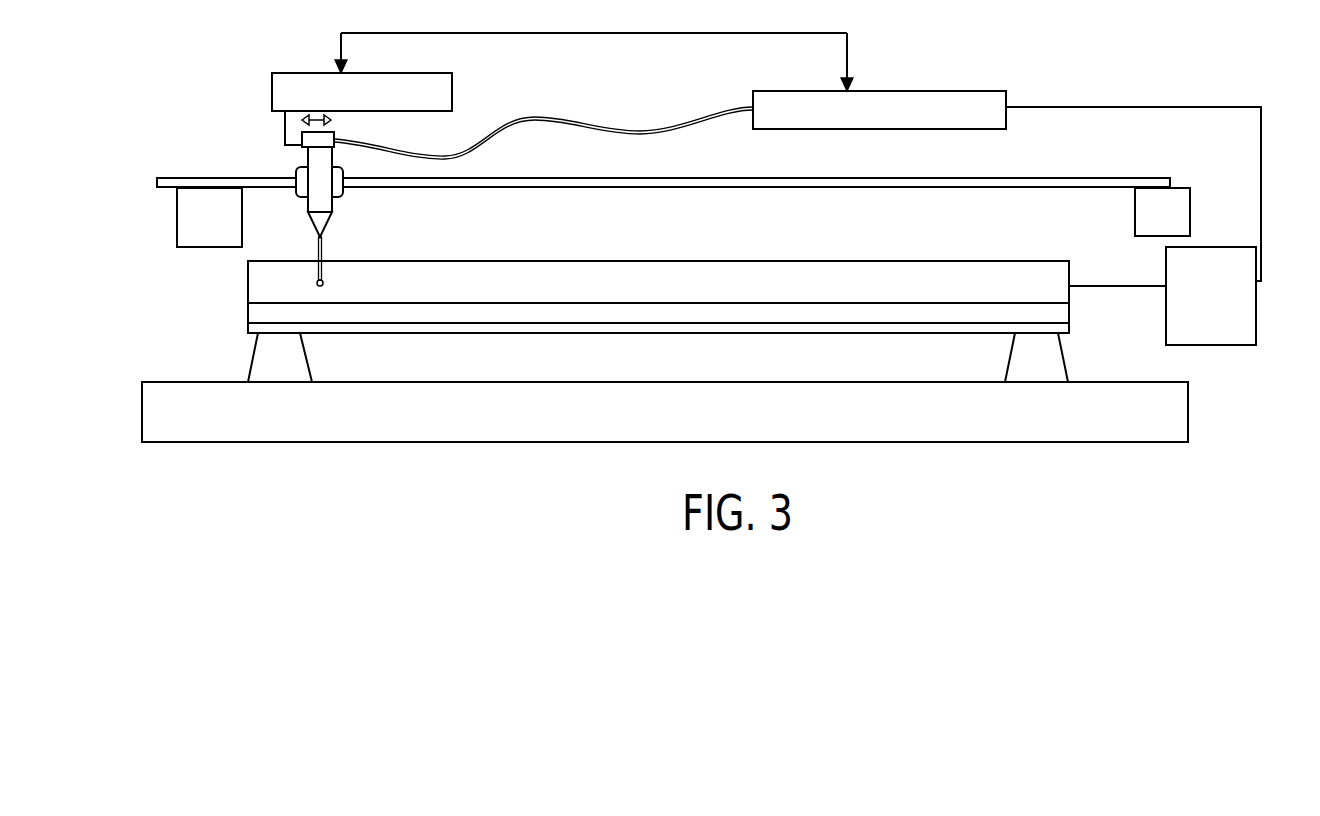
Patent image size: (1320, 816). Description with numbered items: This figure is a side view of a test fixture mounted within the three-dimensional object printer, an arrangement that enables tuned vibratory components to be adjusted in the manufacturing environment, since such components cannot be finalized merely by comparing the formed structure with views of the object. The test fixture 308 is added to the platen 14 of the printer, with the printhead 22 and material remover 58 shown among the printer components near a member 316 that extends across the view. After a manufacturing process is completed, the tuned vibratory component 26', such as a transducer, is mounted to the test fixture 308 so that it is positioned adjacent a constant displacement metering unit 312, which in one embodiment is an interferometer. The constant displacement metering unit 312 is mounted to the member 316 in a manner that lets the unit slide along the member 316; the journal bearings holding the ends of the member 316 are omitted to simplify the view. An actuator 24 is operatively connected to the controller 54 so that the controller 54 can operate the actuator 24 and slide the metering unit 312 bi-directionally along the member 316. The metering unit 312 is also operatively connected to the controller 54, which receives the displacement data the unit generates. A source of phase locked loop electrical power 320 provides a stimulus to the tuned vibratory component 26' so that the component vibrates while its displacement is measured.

The platen 14 is at (1160, 382).
The printhead 22 is at (197, 247).
The actuator 24 is at (422, 73).
The tuned vibratory component 26' is at (658, 267).
The controller 54 is at (953, 91).
The material remover 58 is at (1190, 217).
The test fixture 308 is at (252, 365).
The constant displacement metering unit 312 is at (333, 205).
The member 316 is at (1115, 178).
The source of phase locked loop (PLL) electrical power 320 is at (1220, 345).